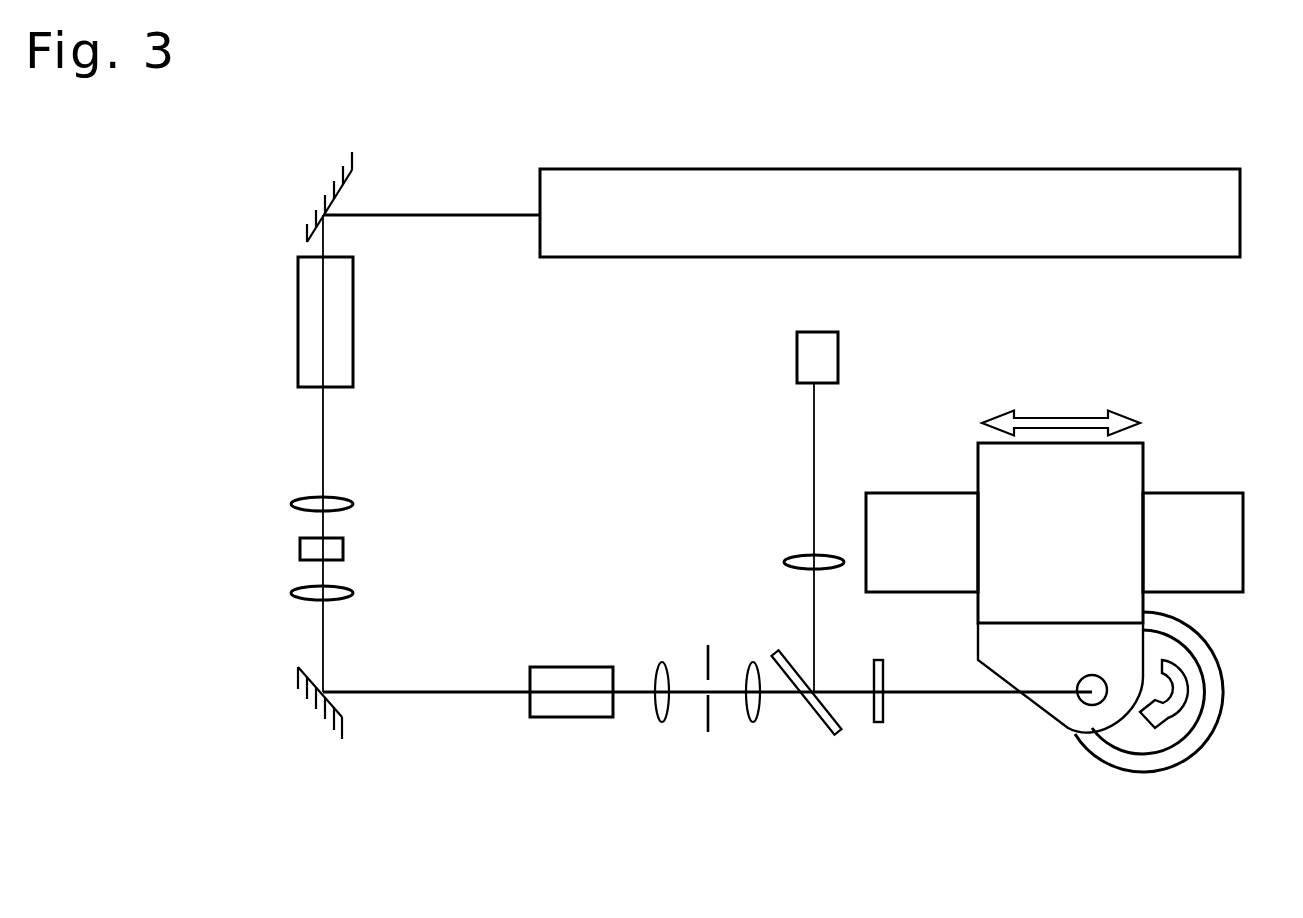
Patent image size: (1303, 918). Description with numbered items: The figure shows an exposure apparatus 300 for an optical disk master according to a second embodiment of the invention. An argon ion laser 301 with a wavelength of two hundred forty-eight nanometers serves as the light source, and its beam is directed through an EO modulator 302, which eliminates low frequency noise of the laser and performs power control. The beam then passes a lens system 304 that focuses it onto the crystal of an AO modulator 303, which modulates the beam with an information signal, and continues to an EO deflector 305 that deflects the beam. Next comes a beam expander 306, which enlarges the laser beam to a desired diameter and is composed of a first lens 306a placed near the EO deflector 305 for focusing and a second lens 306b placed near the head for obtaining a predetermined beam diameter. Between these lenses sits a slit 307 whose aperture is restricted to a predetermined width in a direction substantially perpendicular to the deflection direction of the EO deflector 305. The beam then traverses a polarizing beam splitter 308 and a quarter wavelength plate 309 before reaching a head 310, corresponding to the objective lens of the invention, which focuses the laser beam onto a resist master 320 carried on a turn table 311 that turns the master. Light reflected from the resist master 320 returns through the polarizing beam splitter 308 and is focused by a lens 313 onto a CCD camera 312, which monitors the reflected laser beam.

The exposure apparatus 300 is at (815, 59).
The argon ion laser 301 is at (1100, 178).
The EO modulator 302 is at (353, 311).
The AO modulator 303 is at (343, 548).
The lens system 304 is at (345, 498).
The EO deflector 305 is at (568, 718).
The beam expander 306 is at (703, 717).
The first lens 306a is at (662, 724).
The second lens 306b is at (750, 724).
The slit 307 is at (708, 645).
The polarizing beam splitter 308 is at (825, 740).
The ¼ wavelength plate 309 is at (878, 725).
The head 310 is at (1138, 460).
The turn table 311 is at (1098, 752).
The CCD camera 312 is at (797, 358).
The lens 313 is at (783, 558).
The resist master 320 is at (1163, 647).